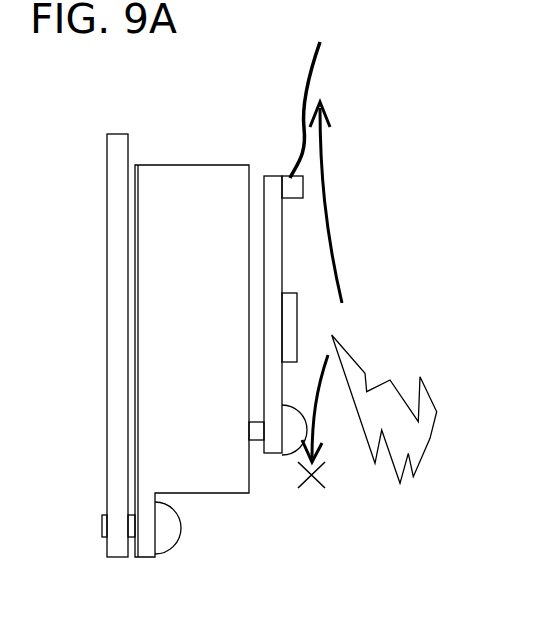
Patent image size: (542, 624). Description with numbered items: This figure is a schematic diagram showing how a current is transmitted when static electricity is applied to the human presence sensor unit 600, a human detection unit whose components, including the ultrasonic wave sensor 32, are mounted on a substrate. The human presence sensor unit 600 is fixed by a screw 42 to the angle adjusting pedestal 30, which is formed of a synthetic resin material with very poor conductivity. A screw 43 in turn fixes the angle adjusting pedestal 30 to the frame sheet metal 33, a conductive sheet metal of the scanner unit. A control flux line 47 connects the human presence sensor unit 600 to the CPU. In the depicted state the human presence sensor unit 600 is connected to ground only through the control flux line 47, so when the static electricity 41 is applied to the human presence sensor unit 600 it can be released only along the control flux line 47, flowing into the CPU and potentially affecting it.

The angle adjusting pedestal 30 is at (183, 175).
The ultrasonic wave sensor 32 is at (290, 325).
The frame sheet metal 33 is at (118, 145).
The static electricity 41 is at (430, 440).
The screw 42 is at (290, 448).
The screw 43 is at (178, 528).
The control flux line 47 is at (310, 92).
The human presence sensor unit 600 is at (272, 265).